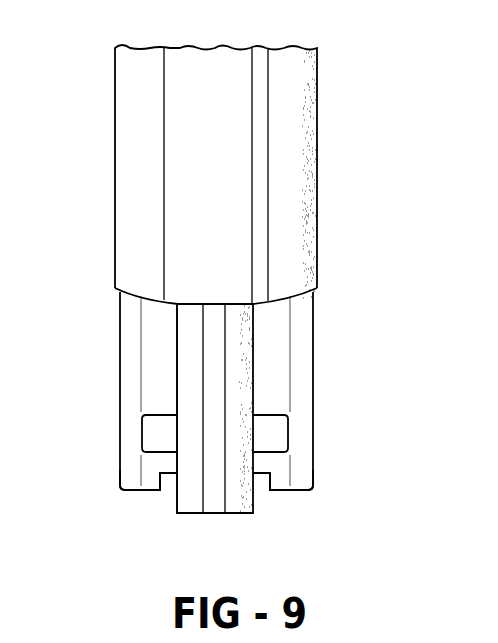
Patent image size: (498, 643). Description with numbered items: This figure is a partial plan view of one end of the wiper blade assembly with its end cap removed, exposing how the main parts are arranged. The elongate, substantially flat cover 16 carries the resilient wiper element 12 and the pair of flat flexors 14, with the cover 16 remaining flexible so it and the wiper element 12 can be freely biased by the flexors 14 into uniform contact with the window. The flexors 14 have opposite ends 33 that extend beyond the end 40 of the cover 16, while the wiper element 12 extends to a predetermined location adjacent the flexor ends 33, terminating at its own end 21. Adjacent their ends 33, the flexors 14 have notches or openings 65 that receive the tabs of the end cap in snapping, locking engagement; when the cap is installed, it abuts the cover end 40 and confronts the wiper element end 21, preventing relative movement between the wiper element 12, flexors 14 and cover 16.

The cover 16 is at (313, 109).
The wiper element 12 is at (242, 372).
The flexors 14 is at (121, 345).
The end of the cover 40 is at (192, 308).
The openings 65 is at (158, 452).
The ends of the flexors 33 is at (130, 484).
The end of the wiper element 21 is at (238, 514).